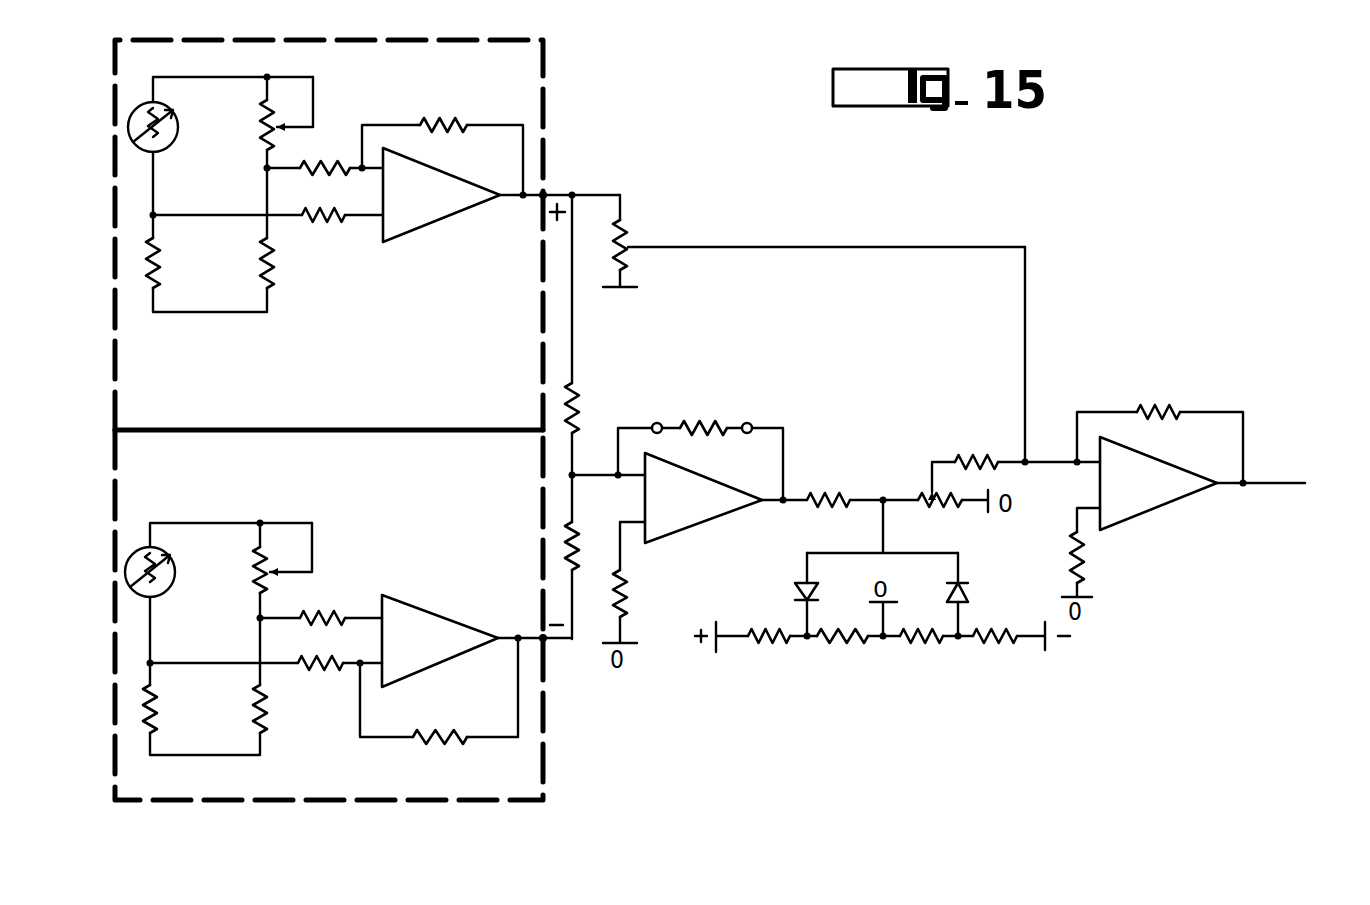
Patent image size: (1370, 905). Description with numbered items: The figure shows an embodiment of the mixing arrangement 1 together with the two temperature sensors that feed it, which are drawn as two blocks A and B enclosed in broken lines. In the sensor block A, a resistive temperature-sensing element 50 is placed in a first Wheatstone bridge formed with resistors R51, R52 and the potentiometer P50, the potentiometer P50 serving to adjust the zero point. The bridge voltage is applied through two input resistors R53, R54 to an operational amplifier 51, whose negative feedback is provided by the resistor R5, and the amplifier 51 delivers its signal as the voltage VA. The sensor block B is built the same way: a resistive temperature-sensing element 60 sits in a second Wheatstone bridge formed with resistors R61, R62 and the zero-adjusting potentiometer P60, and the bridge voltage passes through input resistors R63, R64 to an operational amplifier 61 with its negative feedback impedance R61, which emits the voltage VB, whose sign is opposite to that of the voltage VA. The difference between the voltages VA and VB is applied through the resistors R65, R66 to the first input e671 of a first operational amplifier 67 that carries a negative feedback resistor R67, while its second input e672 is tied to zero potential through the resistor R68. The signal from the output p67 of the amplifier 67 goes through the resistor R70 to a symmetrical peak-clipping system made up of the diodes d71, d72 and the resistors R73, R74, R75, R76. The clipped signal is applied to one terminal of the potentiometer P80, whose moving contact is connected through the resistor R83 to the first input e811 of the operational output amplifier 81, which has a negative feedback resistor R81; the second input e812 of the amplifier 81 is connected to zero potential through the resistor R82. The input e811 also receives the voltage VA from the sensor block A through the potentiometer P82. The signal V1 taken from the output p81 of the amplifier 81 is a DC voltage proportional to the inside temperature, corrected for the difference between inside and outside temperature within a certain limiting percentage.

The sensor block A is at (543, 45).
The sensor block B is at (543, 745).
The resistive temperature-sensing element 50 is at (176, 132).
The potentiometer P50 is at (262, 128).
The negative feedback impedance R51 is at (178, 268).
The bridge resistor R52 is at (275, 258).
The input resistor R53 is at (340, 160).
The input resistor R54 is at (320, 225).
The feedback resistor of amplifier 51 R5 is at (445, 120).
The operational amplifier 51 is at (440, 222).
The voltage VA is at (546, 191).
The resistive temperature-sensing element 60 is at (174, 578).
The potentiometer P60 is at (250, 572).
The negative feedback impedance R61 is at (178, 712).
The bridge resistor R62 is at (270, 703).
The input resistor R63 is at (322, 603).
The input resistor R64 is at (322, 670).
The operational amplifier 61 is at (435, 668).
The voltage VB is at (547, 647).
The potentiometer P82 is at (632, 235).
The resistor R65 is at (585, 398).
The resistor R66 is at (590, 540).
The negative feedback resistor R67 is at (692, 420).
The first operational amplifier 67 is at (703, 525).
The first input e671 is at (674, 483).
The second input e672 is at (672, 535).
The output p67 is at (755, 476).
The resistor R68 is at (632, 598).
The resistor R70 is at (820, 494).
The potentiometer P80 is at (940, 512).
The resistor R83 is at (970, 455).
The resistor R73 is at (772, 622).
The resistor R74 is at (866, 663).
The resistor R75 is at (915, 647).
The resistor R76 is at (988, 624).
The diode d71 is at (812, 597).
The diode d72 is at (944, 592).
The mixing arrangement 1 is at (800, 668).
The operational output amplifier 81 is at (1165, 508).
The negative feedback resistor R81 is at (1140, 405).
The resistor R82 is at (1088, 570).
The first input e811 is at (1132, 474).
The second input e812 is at (1150, 525).
The output p81 is at (1210, 478).
The voltage V1 is at (1283, 513).